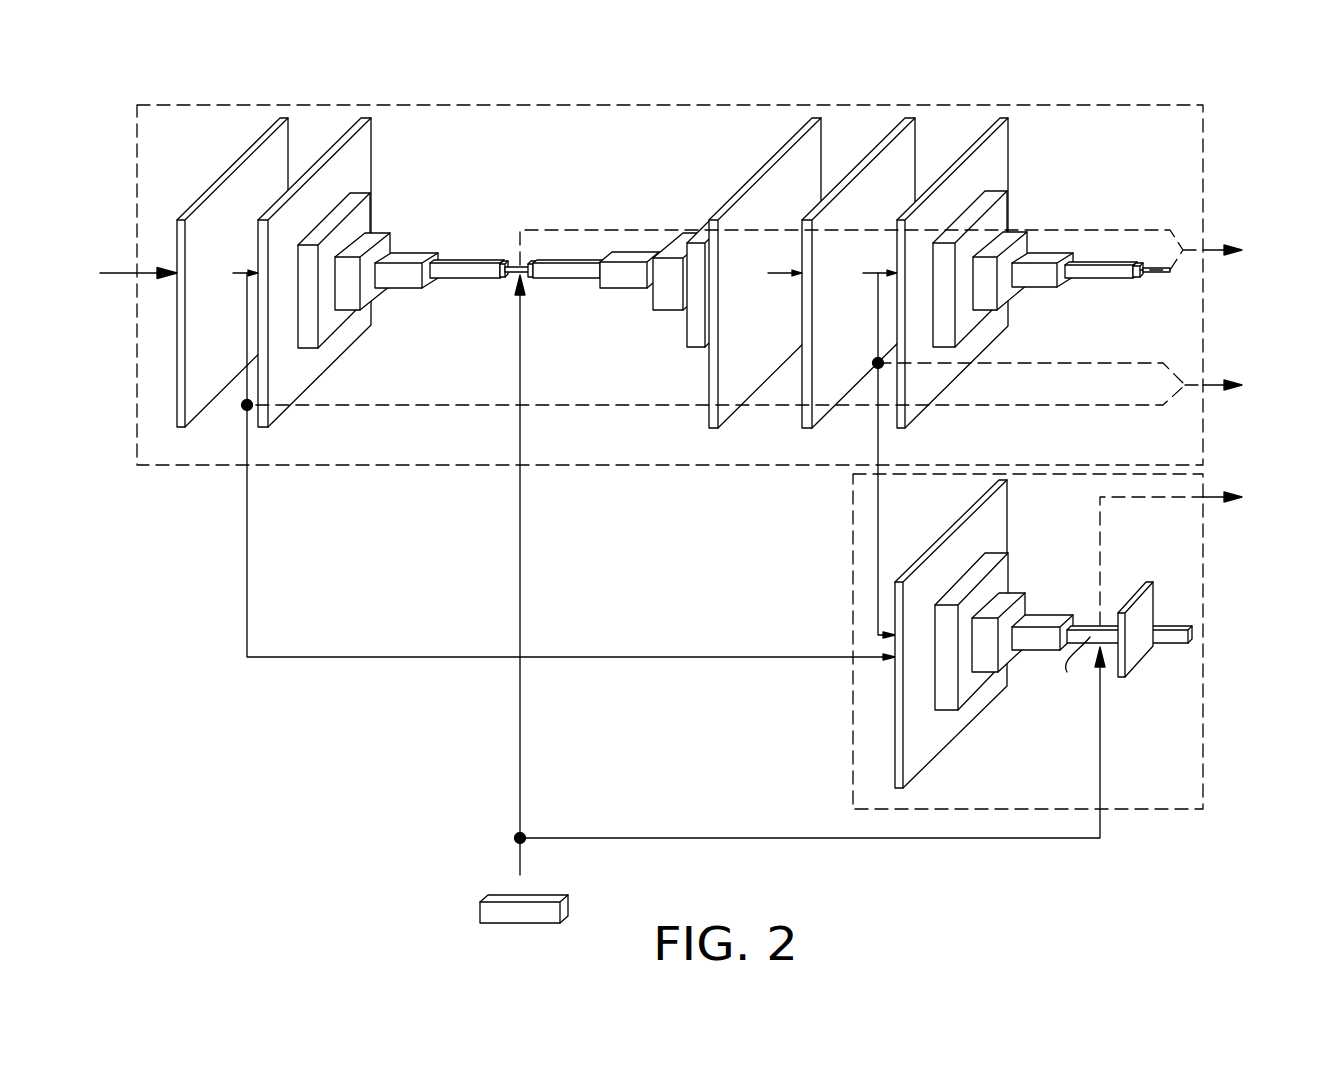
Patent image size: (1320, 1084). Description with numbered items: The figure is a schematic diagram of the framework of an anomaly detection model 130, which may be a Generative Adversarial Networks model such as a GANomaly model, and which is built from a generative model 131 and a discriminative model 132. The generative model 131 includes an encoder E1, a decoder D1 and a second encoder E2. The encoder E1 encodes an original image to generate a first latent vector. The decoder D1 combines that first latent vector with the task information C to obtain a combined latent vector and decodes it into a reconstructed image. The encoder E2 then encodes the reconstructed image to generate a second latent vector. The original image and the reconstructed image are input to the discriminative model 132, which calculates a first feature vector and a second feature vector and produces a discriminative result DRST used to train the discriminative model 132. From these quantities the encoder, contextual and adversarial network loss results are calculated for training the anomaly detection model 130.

The anomaly detection model 130 is at (1118, 88).
The generative model 131 is at (1203, 148).
The discriminative model 132 is at (1203, 697).
The encoder E1 is at (473, 263).
The decoder D1 is at (727, 202).
The encoder E2 is at (1110, 263).
The discriminative result DRST is at (1173, 637).
The task information C is at (524, 929).